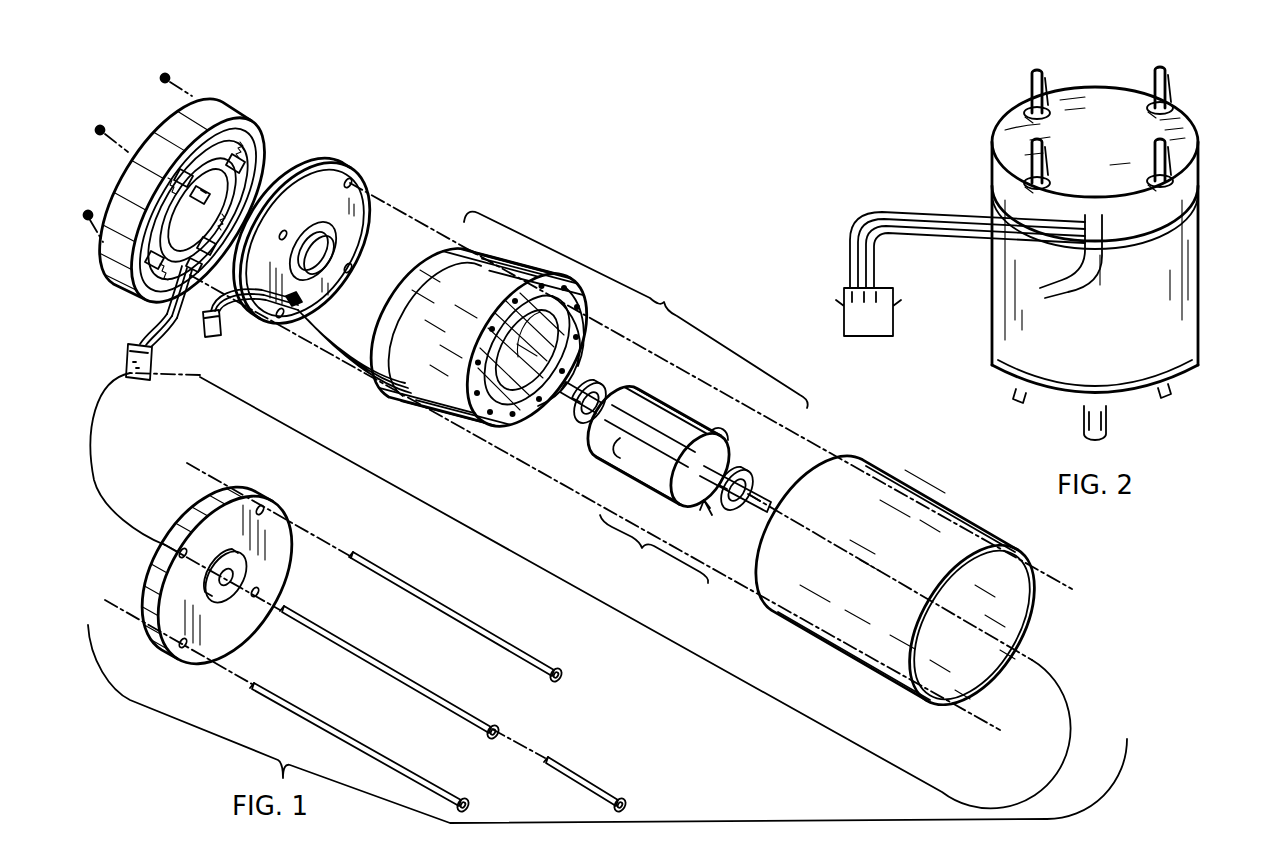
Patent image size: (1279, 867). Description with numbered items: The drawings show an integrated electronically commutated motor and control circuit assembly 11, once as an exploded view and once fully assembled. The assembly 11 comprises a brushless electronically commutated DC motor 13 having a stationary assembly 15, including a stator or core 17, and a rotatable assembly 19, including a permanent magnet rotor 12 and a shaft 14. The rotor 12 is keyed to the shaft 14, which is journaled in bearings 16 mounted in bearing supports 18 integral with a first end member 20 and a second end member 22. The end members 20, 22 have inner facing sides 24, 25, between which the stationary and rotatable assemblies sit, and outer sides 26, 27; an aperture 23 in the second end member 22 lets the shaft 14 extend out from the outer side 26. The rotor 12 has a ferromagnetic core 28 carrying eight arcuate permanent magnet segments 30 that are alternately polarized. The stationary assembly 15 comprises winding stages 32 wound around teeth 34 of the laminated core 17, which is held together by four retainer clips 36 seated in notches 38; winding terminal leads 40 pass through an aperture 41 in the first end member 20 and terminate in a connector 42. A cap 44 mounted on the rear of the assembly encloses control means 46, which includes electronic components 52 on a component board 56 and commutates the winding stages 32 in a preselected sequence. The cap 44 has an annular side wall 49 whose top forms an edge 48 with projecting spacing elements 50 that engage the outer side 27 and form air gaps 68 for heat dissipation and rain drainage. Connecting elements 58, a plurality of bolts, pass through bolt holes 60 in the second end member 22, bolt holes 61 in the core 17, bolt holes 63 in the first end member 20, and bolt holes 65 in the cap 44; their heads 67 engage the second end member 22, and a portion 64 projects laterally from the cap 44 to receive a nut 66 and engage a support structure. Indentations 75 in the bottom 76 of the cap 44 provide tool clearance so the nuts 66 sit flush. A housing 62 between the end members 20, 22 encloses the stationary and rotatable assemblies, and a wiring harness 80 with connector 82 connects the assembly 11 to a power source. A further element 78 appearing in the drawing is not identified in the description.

In FIG. 1, the integrated electronically commutated motor and control circuit assembly 11 is at (508, 188).
In FIG. 1, the permanent magnet rotor 12 is at (707, 526).
In FIG. 1, the brushless electronically commutated DC motor 13 is at (636, 310).
In FIG. 1, the shaft 14 is at (752, 505).
In FIG. 2, the shaft 14 is at (1108, 420).
In FIG. 1, the stationary assembly 15 is at (439, 437).
In FIG. 1, the bearings 16 is at (748, 476).
In FIG. 1, the stator or core 17 is at (494, 262).
In FIG. 1, the bearing supports 18 is at (345, 249).
In FIG. 1, the rotatable assembly 19 is at (654, 550).
In FIG. 1, the first end member 20 is at (352, 158).
In FIG. 2, the first end member 20 is at (1199, 210).
In FIG. 1, the second end member 22 is at (246, 634).
In FIG. 2, the second end member 22 is at (1200, 370).
In FIG. 1, the aperture 23 is at (236, 590).
In FIG. 1, the inner facing side 24 is at (256, 320).
In FIG. 1, the inner facing side 25 is at (190, 505).
In FIG. 1, the outer side 26 is at (275, 550).
In FIG. 1, the outer side 27 is at (305, 152).
In FIG. 1, the ferromagnetic core 28 is at (690, 492).
In FIG. 1, the arcuate segments 30 is at (716, 432).
In FIG. 1, the winding stages 32 is at (535, 395).
In FIG. 1, the teeth 34 is at (512, 405).
In FIG. 1, the retainer clips 36 is at (420, 400).
In FIG. 1, the notches 38 is at (405, 394).
In FIG. 1, the winding terminal leads 40 is at (330, 340).
In FIG. 1, the aperture 41 is at (292, 308).
In FIG. 1, the connector 42 is at (208, 332).
In FIG. 1, the cap 44 is at (254, 95).
In FIG. 2, the cap 44 is at (1200, 172).
In FIG. 1, the control means 46 is at (252, 140).
In FIG. 1, the edge 48 is at (245, 156).
In FIG. 1, the annular side wall 49 is at (206, 100).
In FIG. 1, the spacing elements 50 is at (158, 258).
In FIG. 2, the spacing elements 50 is at (1200, 236).
In FIG. 1, the electronic components 52 is at (197, 181).
In FIG. 1, the component board 56 is at (200, 263).
In FIG. 1, the connecting elements 58 is at (568, 765).
In FIG. 2, the connecting elements 58 is at (1152, 155).
In FIG. 1, the bolt holes 60 is at (182, 648).
In FIG. 1, the bolt holes 61 is at (470, 425).
In FIG. 1, the housing 62 is at (912, 486).
In FIG. 2, the housing 62 is at (1200, 287).
In FIG. 1, the bolt holes 63 is at (279, 317).
In FIG. 2, the portion 64 is at (1172, 156).
In FIG. 1, the bolt holes 65 is at (162, 268).
In FIG. 1, the nut 66 is at (89, 222).
In FIG. 2, the nut 66 is at (1162, 188).
In FIG. 1, the head 67 is at (627, 805).
In FIG. 2, the head 67 is at (1170, 384).
In FIG. 2, the air gaps 68 is at (1200, 256).
In FIG. 2, the indentations 75 is at (1140, 180).
In FIG. 2, the bottom 76 is at (1010, 130).
In FIG. 1, the brush leads 78 is at (176, 280).
In FIG. 1, the wiring harness 80 is at (135, 330).
In FIG. 2, the wiring harness 80 is at (900, 210).
In FIG. 1, the connector 82 is at (126, 373).
In FIG. 2, the connector 82 is at (868, 336).